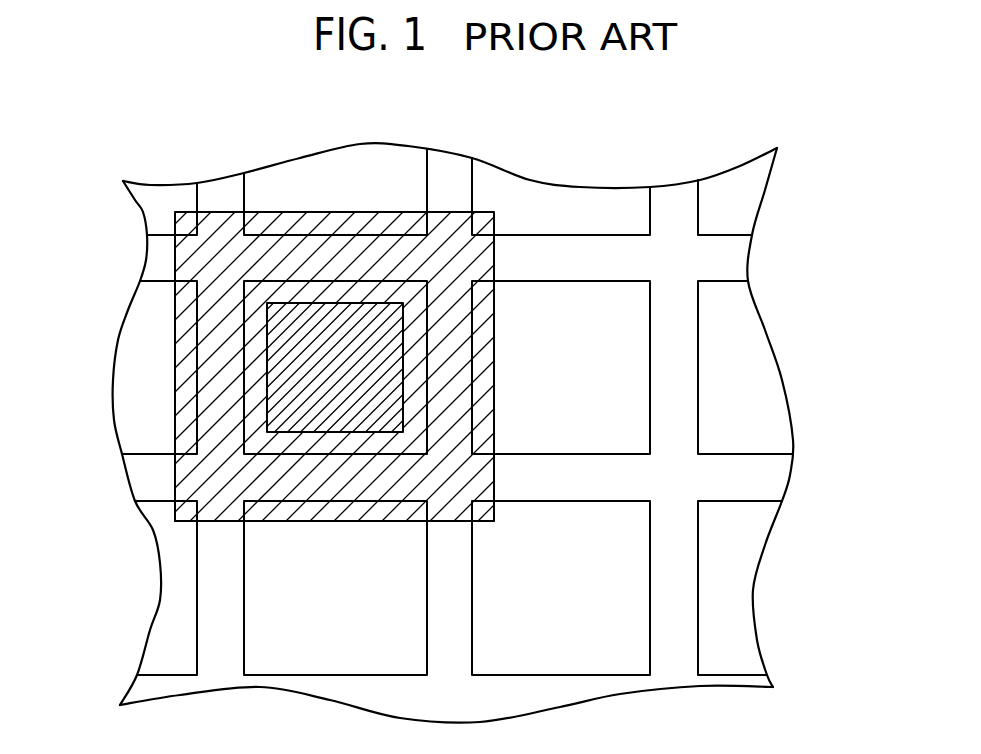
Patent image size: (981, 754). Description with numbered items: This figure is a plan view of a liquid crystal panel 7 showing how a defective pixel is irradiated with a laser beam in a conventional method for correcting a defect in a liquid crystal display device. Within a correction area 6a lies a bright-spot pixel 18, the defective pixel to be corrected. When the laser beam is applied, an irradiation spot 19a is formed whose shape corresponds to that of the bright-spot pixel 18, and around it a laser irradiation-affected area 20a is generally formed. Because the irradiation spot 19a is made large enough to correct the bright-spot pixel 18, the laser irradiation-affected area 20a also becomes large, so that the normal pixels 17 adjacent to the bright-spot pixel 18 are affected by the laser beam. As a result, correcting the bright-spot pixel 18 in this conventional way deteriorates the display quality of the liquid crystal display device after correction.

The liquid crystal panel 7 is at (772, 331).
The pixels 17 is at (409, 162).
The correction area 6a is at (175, 482).
The bright-spot pixel 18 is at (365, 447).
The irradiation spot 19a is at (308, 306).
The laser irradiation-affected area 20a is at (442, 520).